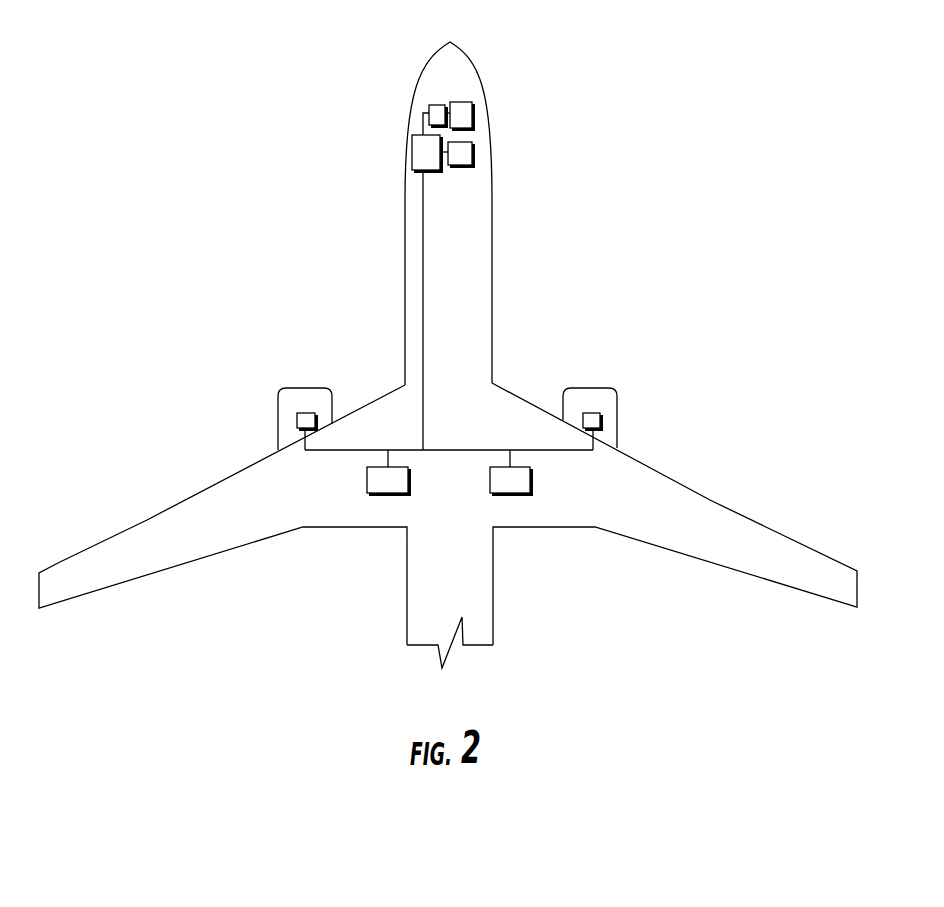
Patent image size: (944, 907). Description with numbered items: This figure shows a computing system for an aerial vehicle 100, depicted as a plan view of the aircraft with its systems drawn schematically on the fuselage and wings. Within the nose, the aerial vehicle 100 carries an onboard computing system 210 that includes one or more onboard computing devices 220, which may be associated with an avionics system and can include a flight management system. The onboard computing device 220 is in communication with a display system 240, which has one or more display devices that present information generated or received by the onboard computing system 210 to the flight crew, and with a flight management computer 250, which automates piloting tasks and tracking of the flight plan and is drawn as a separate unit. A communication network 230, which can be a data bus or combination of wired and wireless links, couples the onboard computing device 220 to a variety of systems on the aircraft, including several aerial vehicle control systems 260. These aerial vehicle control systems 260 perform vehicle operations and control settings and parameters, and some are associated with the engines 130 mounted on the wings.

The aerial vehicle 100 is at (493, 259).
The engine 130 is at (312, 395).
The onboard computing system 210 is at (609, 136).
The onboard computing device 220 is at (412, 146).
The communication network 230 is at (423, 285).
The display system 240 is at (462, 102).
The flight management computer 250 is at (436, 103).
The aerial vehicle control system 260 is at (297, 420).